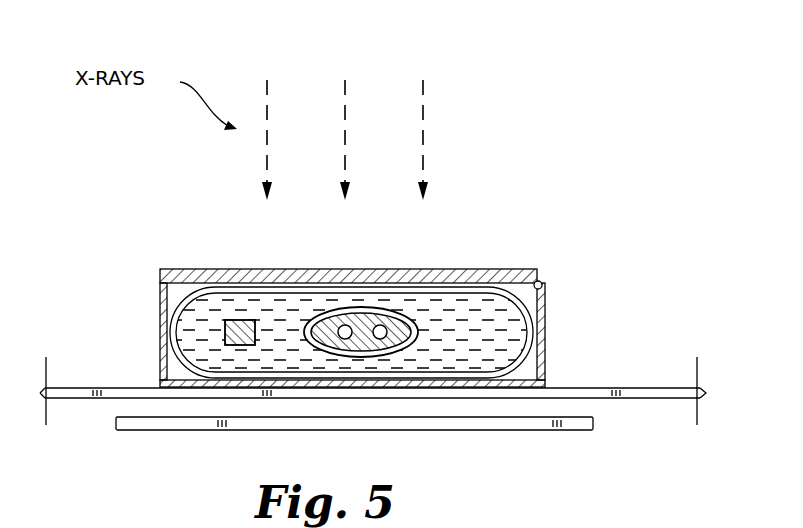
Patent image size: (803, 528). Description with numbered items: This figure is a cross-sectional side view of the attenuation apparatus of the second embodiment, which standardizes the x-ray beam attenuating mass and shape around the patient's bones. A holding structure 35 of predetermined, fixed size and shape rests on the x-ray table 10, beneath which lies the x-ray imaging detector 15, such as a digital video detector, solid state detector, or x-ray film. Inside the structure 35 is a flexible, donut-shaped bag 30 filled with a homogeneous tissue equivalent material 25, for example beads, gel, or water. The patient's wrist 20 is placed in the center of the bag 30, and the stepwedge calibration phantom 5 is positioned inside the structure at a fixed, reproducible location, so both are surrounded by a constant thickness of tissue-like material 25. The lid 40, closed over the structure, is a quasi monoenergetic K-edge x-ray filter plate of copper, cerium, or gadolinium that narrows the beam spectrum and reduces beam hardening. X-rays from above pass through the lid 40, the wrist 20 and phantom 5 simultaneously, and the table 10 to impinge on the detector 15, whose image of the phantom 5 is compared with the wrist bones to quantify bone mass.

The stepwedge calibration phantom 5 is at (233, 320).
The x-ray table 10 is at (643, 388).
The x-ray imaging detector 15 is at (565, 430).
The patient's wrist 20 is at (354, 314).
The tissue equivalent material 25 is at (497, 295).
The flexible bag 30 is at (170, 336).
The holding structure 35 is at (553, 332).
The lid 40 is at (185, 269).